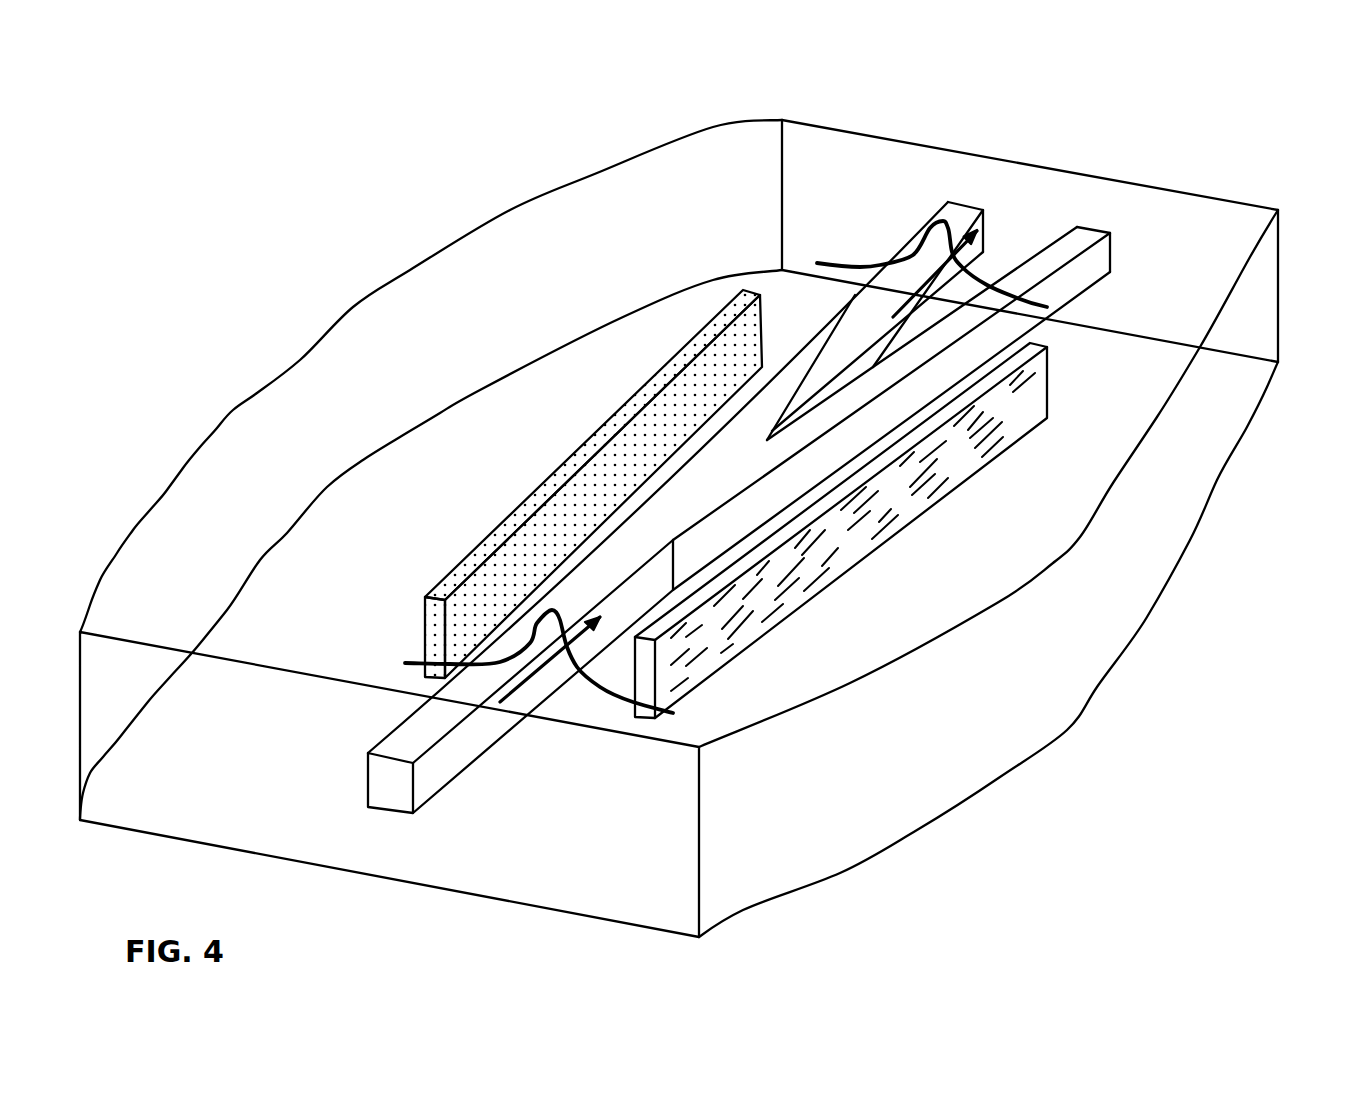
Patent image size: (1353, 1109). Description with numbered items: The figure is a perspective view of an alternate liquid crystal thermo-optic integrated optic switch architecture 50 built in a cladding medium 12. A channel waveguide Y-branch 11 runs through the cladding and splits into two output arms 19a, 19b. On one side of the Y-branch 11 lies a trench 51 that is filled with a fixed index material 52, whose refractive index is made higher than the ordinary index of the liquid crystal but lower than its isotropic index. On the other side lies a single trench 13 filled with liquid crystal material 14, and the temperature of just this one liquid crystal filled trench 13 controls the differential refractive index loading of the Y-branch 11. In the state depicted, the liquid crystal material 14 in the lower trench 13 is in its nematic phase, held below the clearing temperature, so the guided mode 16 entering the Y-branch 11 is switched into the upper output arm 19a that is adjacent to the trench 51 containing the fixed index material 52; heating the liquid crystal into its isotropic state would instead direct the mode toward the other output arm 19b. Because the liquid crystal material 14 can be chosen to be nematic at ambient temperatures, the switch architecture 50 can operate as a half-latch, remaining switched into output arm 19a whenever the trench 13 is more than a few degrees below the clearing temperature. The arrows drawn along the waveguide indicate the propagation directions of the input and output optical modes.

The Y-branch 11 is at (839, 445).
The cladding medium 12 is at (293, 443).
The trench 13 is at (985, 530).
The liquid crystal material 14 is at (960, 447).
The guided mode 16 is at (597, 697).
The output arm 19a is at (963, 213).
The output arm 19b is at (1090, 238).
The alternate liquid crystal thermo-optic switch architecture 50 is at (588, 358).
The trench 51 is at (710, 323).
The fixed index material 52 is at (667, 373).